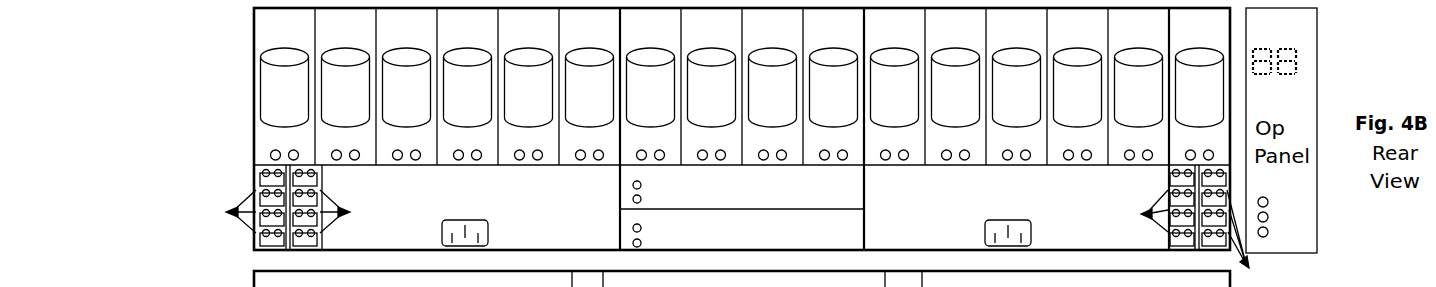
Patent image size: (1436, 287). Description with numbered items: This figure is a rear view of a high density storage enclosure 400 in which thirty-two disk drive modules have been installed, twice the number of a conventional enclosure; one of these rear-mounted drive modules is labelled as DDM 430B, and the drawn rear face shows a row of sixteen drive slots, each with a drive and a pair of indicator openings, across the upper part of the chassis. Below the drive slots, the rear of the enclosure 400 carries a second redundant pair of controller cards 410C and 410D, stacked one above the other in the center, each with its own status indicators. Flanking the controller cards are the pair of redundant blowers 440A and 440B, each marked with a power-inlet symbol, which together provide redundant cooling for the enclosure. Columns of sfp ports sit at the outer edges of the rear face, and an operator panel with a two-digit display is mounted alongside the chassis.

The high density storage enclosure 400 is at (250, 37).
The DDM 430B is at (216, 77).
The controller card 410C is at (834, 192).
The controller card 410D is at (834, 231).
The blower 440B is at (503, 216).
The blower 440A is at (1040, 215).